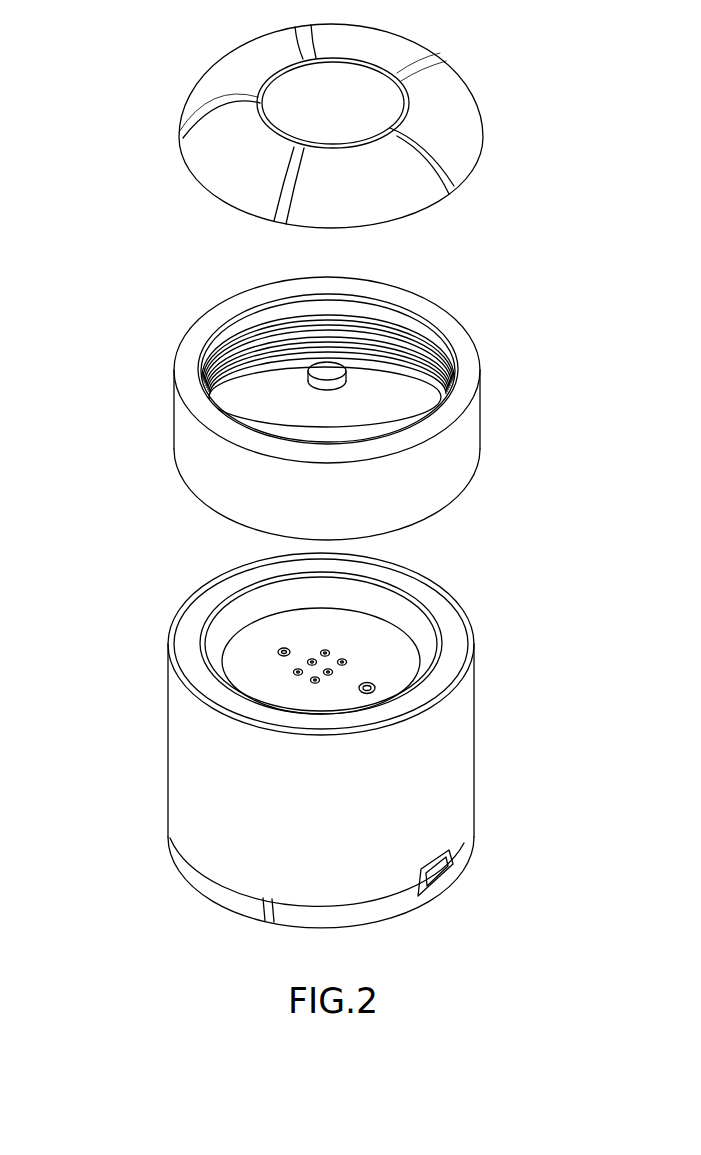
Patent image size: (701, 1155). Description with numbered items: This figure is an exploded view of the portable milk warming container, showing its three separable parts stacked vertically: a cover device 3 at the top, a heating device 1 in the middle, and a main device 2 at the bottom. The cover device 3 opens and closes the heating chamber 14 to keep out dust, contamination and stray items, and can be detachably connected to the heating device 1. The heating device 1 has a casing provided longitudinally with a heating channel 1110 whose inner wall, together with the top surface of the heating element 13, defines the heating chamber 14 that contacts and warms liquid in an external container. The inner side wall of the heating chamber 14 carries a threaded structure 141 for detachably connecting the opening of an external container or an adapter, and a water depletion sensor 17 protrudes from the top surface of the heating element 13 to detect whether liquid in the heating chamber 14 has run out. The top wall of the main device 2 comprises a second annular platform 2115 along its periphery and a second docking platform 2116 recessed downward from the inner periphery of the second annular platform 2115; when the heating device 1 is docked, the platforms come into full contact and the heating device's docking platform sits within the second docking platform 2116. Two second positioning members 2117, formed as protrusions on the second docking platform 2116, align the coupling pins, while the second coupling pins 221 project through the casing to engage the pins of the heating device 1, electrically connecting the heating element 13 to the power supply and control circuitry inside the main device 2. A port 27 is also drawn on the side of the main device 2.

The heating device 1 is at (480, 442).
The heating element 13 is at (268, 415).
The heating chamber 14 is at (215, 353).
The threaded structure 141 is at (268, 373).
The water depletion sensor 17 is at (324, 364).
The heating channel 1110 is at (376, 320).
The main device 2 is at (462, 750).
The second annular platform 2115 is at (215, 600).
The second docking platform 2116 is at (257, 687).
The second positioning member 2117 is at (284, 648).
The second coupling pin 221 is at (344, 659).
The charging port 27 is at (458, 865).
The cover device 3 is at (480, 122).